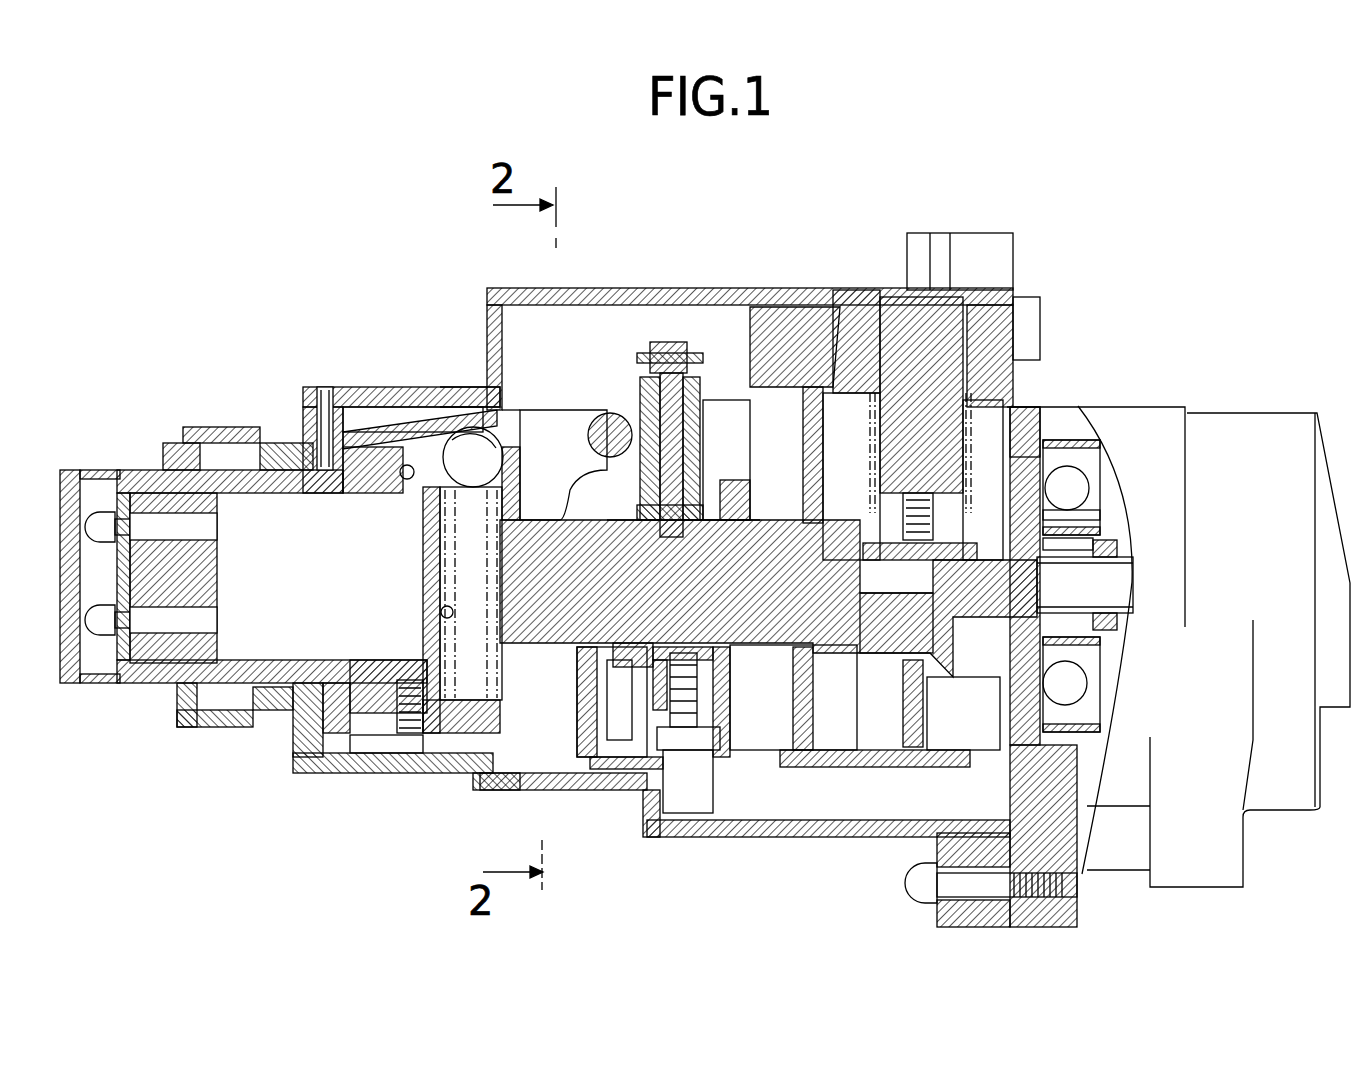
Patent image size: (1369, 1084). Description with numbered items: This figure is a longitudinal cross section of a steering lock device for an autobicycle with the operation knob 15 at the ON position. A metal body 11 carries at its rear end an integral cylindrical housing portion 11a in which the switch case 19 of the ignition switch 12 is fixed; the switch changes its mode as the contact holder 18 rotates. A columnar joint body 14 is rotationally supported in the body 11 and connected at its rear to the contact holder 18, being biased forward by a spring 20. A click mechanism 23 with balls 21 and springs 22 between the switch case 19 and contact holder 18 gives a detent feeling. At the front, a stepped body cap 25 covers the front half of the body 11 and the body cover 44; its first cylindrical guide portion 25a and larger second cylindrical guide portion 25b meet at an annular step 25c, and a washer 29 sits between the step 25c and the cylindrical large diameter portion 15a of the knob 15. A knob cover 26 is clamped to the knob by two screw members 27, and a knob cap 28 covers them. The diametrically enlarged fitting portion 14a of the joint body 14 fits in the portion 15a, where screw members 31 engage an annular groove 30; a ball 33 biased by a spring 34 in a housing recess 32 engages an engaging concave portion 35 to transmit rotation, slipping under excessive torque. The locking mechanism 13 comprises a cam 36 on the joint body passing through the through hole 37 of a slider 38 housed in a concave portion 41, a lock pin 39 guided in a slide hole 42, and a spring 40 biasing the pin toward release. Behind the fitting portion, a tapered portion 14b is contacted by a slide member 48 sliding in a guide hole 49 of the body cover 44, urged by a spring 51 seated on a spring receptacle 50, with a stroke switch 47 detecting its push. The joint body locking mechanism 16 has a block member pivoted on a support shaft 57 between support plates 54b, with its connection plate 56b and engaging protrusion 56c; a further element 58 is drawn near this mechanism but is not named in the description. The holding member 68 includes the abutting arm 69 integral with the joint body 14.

The body 11 is at (992, 287).
The cylindrical housing portion 11a is at (1055, 407).
The ignition switch 12 is at (1086, 750).
The locking mechanism 13 is at (1017, 430).
The joint body 14 is at (558, 645).
The diametrically enlarged fitting portion 14a is at (373, 727).
The tapered portion 14b is at (642, 515).
The operation knob 15 is at (228, 472).
The cylindrical large diameter portion 15a is at (457, 405).
The joint body locking mechanism 16 is at (590, 287).
The contact holder 18 is at (1085, 543).
The switch case 19 is at (1100, 437).
The spring 20 is at (1100, 593).
The balls 21 is at (1066, 488).
The springs 22 is at (1097, 502).
The click mechanism 23 is at (1090, 683).
The body cap 25 is at (622, 287).
The first cylindrical guide portion 25a is at (283, 715).
The second cylindrical guide portion 25b is at (398, 775).
The annular step 25c is at (288, 446).
The knob cover 26 is at (172, 448).
The screw members 27 is at (106, 522).
The knob cap 28 is at (63, 500).
The washer 29 is at (325, 390).
The annular groove 30 is at (402, 482).
The screw members 31 is at (411, 737).
The housing recess 32 is at (443, 612).
The ball 33 is at (468, 478).
The spring 34 is at (502, 697).
The engaging concave portion 35 is at (400, 432).
The cam 36 is at (855, 658).
The through hole 37 is at (878, 618).
The slider 38 is at (907, 695).
The lock pin 39 is at (897, 303).
The spring 40 is at (800, 340).
The concave portion 41 is at (988, 423).
The slide hole 42 is at (945, 330).
The body cover 44 is at (922, 777).
The stroke switch 47 is at (690, 792).
The slide member 48 is at (627, 643).
The guide hole 49 is at (627, 707).
The spring receptacle 50 is at (643, 800).
The spring 51 is at (600, 768).
The support plates 54b is at (702, 380).
The connection plate 56b is at (713, 423).
The engaging protrusion 56c is at (720, 480).
The support shaft 57 is at (676, 342).
The ball 58 is at (640, 397).
The holding member 68 is at (523, 402).
The abutting arm 69 is at (541, 430).